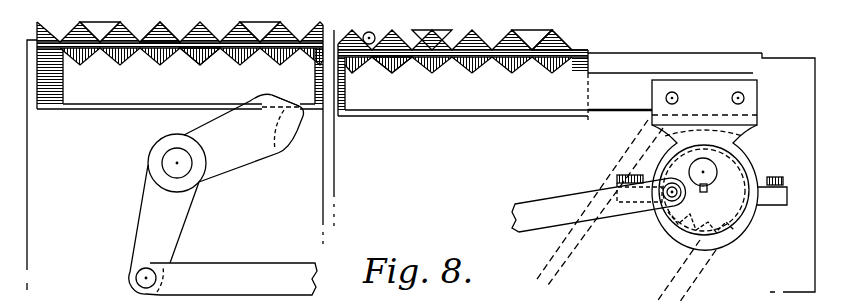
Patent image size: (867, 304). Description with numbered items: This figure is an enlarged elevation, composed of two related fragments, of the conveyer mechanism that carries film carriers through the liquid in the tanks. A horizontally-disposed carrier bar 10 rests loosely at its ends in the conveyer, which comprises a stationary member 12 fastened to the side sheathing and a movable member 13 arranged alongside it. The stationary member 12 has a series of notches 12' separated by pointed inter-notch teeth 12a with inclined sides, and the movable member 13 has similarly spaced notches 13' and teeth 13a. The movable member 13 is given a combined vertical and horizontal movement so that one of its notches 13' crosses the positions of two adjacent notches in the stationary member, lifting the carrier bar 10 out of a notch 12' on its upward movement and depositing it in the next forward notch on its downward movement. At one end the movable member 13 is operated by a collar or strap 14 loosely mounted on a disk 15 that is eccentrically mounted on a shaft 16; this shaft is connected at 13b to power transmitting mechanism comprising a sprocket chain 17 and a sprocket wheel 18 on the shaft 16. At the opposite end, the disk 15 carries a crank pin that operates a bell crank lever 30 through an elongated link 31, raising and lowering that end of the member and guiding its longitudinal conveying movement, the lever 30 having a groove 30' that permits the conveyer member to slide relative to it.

The carrier bar 10 is at (373, 23).
The stationary member 12 is at (399, 72).
The notches 12' is at (316, 26).
The inter-notch teeth 12a is at (557, 33).
The movable member 13 is at (344, 62).
The notches 13' is at (299, 40).
The teeth 13a is at (258, 36).
The connection 13b is at (733, 88).
The collar or strap 14 is at (753, 217).
The disk 15 is at (727, 178).
The shaft 16 is at (713, 167).
The sprocket chain 17 is at (697, 274).
The sprocket wheel 18 is at (632, 215).
The bell crank lever 30 is at (216, 194).
The groove 30' is at (288, 140).
The elongated link 31 is at (287, 248).